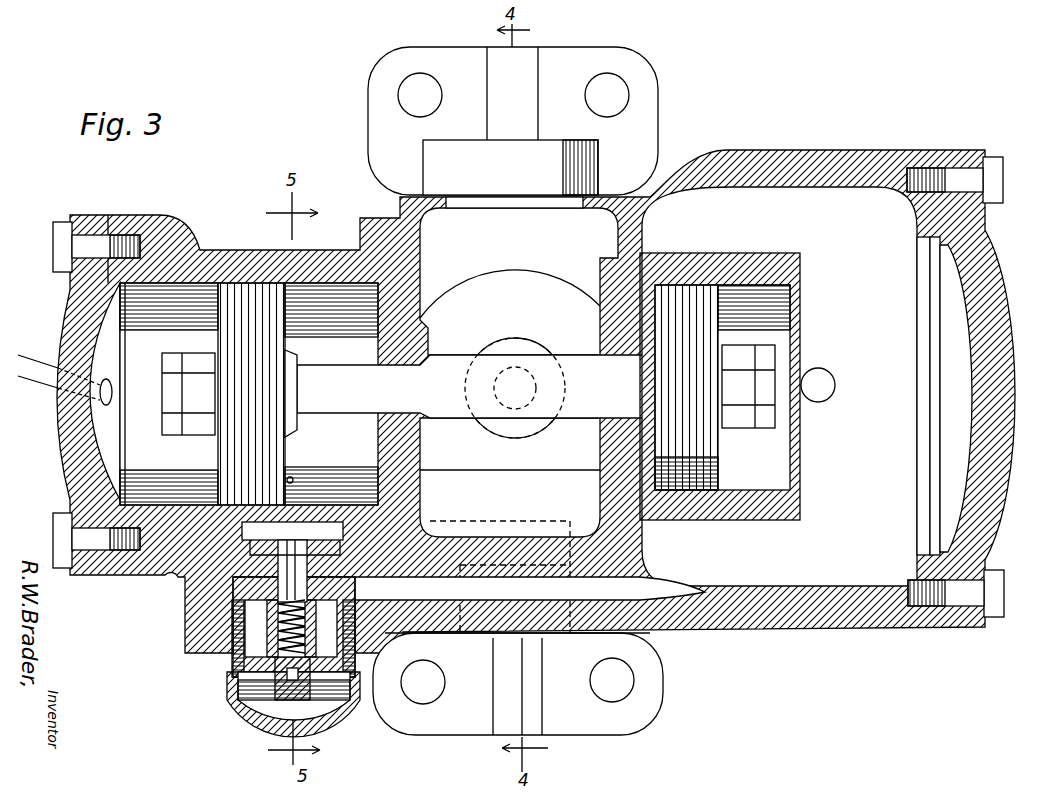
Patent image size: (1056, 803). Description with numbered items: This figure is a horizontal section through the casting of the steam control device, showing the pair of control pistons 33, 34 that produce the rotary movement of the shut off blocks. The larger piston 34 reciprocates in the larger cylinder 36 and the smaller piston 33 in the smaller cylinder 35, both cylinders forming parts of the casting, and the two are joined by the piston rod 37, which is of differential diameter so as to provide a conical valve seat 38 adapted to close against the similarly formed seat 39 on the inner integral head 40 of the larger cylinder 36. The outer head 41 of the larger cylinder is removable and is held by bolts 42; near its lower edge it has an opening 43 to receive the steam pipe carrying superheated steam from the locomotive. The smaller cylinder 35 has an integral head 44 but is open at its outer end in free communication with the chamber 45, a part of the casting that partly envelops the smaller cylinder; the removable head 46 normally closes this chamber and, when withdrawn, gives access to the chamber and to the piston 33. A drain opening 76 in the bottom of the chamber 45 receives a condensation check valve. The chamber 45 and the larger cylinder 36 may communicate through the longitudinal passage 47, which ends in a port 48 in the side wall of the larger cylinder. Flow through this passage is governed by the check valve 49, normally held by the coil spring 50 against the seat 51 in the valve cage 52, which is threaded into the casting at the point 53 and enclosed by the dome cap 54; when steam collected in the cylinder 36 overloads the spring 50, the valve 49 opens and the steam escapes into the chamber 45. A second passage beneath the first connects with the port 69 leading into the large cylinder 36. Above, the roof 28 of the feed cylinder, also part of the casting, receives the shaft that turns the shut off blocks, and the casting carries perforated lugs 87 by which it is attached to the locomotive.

The perforated lugs 87 is at (388, 118).
The chamber 45 is at (808, 200).
The bolts 42 is at (53, 233).
The larger cylinder 36 is at (237, 260).
The control piston 34 is at (284, 292).
The inner integral head 40 is at (372, 258).
The piston rod 37 is at (450, 365).
The roof 28 is at (546, 286).
The seat 39 is at (424, 314).
The integral head 44 is at (600, 323).
The conical valve seat 38 is at (428, 398).
The smaller cylinder 35 is at (746, 262).
The control piston 33 is at (703, 332).
The drain opening 76 is at (826, 377).
The removable head 46 is at (998, 303).
The outer head 41 is at (60, 337).
The opening 43 is at (110, 402).
The port 69 is at (292, 477).
The port 48 is at (292, 510).
The threaded point 53 is at (253, 553).
The valve cage 52 is at (257, 580).
The seat 51 is at (258, 596).
The check valve 49 is at (236, 640).
The coil spring 50 is at (280, 602).
The dome cap 54 is at (270, 730).
The longitudinal passage 47 is at (503, 590).